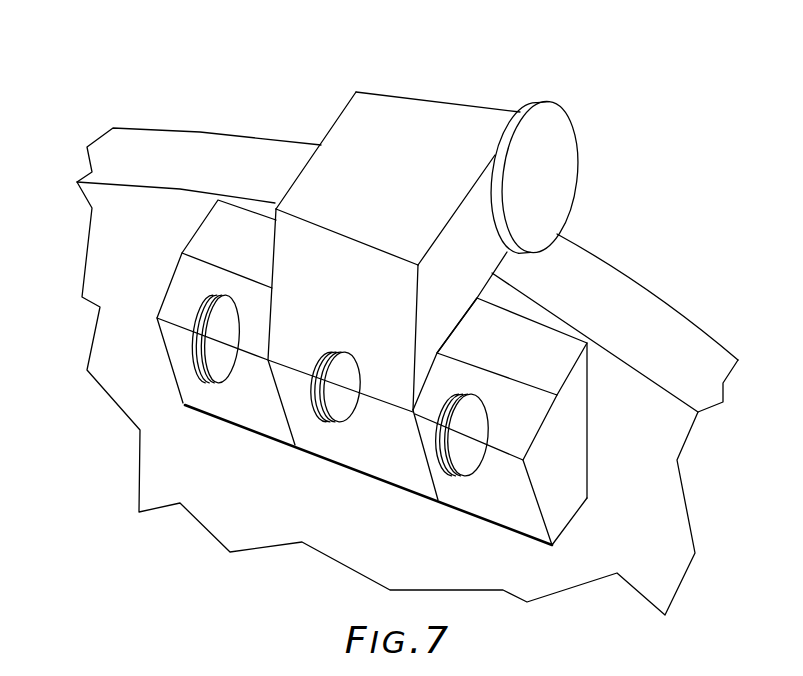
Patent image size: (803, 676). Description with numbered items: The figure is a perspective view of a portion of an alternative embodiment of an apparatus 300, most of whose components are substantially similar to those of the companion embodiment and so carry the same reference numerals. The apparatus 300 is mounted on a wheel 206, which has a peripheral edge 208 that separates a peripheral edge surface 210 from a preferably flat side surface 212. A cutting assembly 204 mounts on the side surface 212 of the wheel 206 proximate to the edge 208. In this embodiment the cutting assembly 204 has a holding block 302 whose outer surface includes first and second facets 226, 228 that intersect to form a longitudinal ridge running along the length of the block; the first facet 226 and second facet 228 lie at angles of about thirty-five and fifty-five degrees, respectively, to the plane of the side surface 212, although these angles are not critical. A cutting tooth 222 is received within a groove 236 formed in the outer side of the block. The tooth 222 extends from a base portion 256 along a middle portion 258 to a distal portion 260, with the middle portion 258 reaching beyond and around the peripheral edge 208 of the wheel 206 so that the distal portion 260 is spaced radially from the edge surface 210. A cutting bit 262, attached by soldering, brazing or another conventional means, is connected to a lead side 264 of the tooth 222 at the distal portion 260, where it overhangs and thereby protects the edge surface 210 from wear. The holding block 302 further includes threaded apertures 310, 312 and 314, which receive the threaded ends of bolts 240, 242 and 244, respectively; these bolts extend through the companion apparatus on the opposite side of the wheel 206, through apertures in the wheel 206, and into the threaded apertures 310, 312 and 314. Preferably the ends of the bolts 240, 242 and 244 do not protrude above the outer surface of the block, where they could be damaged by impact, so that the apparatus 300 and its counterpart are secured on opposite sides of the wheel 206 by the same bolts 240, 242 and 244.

The apparatus 300 is at (150, 97).
The cutting assembly 204 is at (354, 290).
The cutting tooth 222 is at (297, 172).
The cutting bit 262 is at (543, 102).
The distal portion 260 is at (369, 172).
The peripheral edge 208 is at (542, 295).
The wheel 206 is at (597, 377).
The middle portion 258 is at (304, 282).
The lead side 264 is at (441, 282).
The bolt 244 is at (327, 412).
The peripheral edge surface 210 is at (661, 371).
The first facet 226 is at (496, 417).
The holding block 302 is at (165, 350).
The bolt 242 is at (222, 392).
The base portion 256 is at (356, 464).
The threaded aperture 312 is at (197, 352).
The side surface 212 is at (604, 490).
The threaded aperture 314 is at (338, 415).
The groove 236 is at (430, 470).
The second facet 228 is at (527, 502).
The bolt 240 is at (505, 490).
The threaded aperture 310 is at (478, 435).